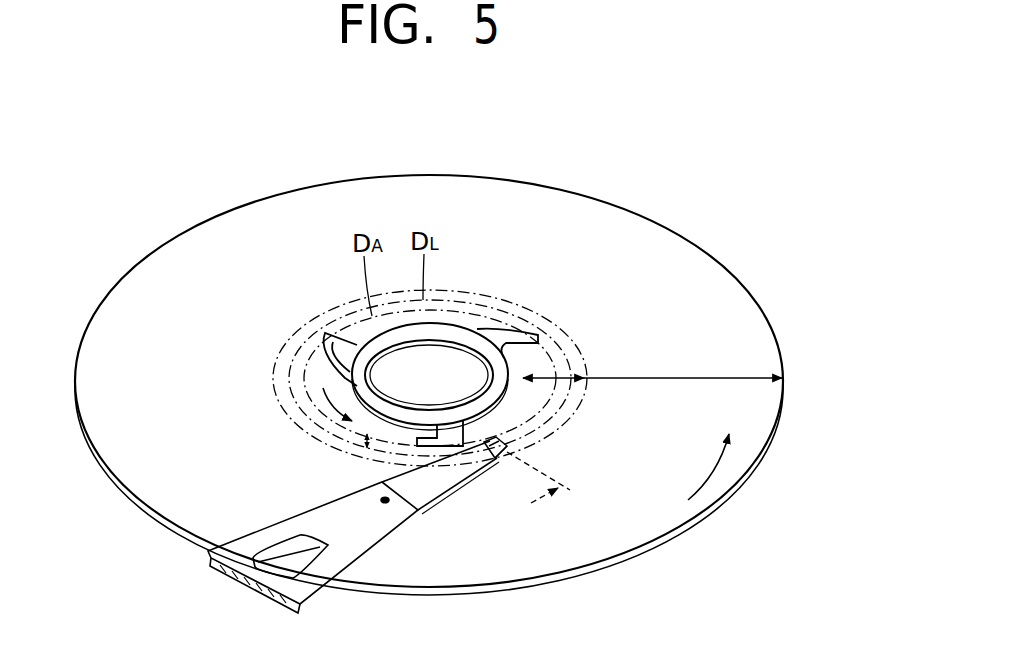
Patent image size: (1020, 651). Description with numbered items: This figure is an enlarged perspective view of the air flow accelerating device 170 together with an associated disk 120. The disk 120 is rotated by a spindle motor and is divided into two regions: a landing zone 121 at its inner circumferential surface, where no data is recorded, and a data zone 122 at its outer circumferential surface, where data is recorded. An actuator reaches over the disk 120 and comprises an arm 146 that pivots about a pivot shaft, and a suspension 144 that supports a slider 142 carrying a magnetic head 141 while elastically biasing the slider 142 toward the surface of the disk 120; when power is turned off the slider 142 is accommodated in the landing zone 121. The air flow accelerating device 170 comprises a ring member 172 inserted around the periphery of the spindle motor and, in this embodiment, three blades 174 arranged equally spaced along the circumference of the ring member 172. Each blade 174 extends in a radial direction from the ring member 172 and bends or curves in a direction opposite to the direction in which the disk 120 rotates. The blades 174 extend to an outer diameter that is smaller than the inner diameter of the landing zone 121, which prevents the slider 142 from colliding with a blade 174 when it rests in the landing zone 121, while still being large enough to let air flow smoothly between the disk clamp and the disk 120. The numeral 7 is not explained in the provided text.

The disk 120 is at (678, 212).
The landing zone 121 is at (561, 376).
The data zone 122 is at (642, 377).
The magnetic head 141 is at (506, 442).
The slider 142 is at (506, 455).
The suspension 144 is at (430, 488).
The arm 146 is at (232, 562).
The air flow accelerating device 170 is at (359, 369).
The ring member 172 is at (350, 381).
The blade 174 is at (333, 343).
The gap / section indicator 7 is at (459, 477).